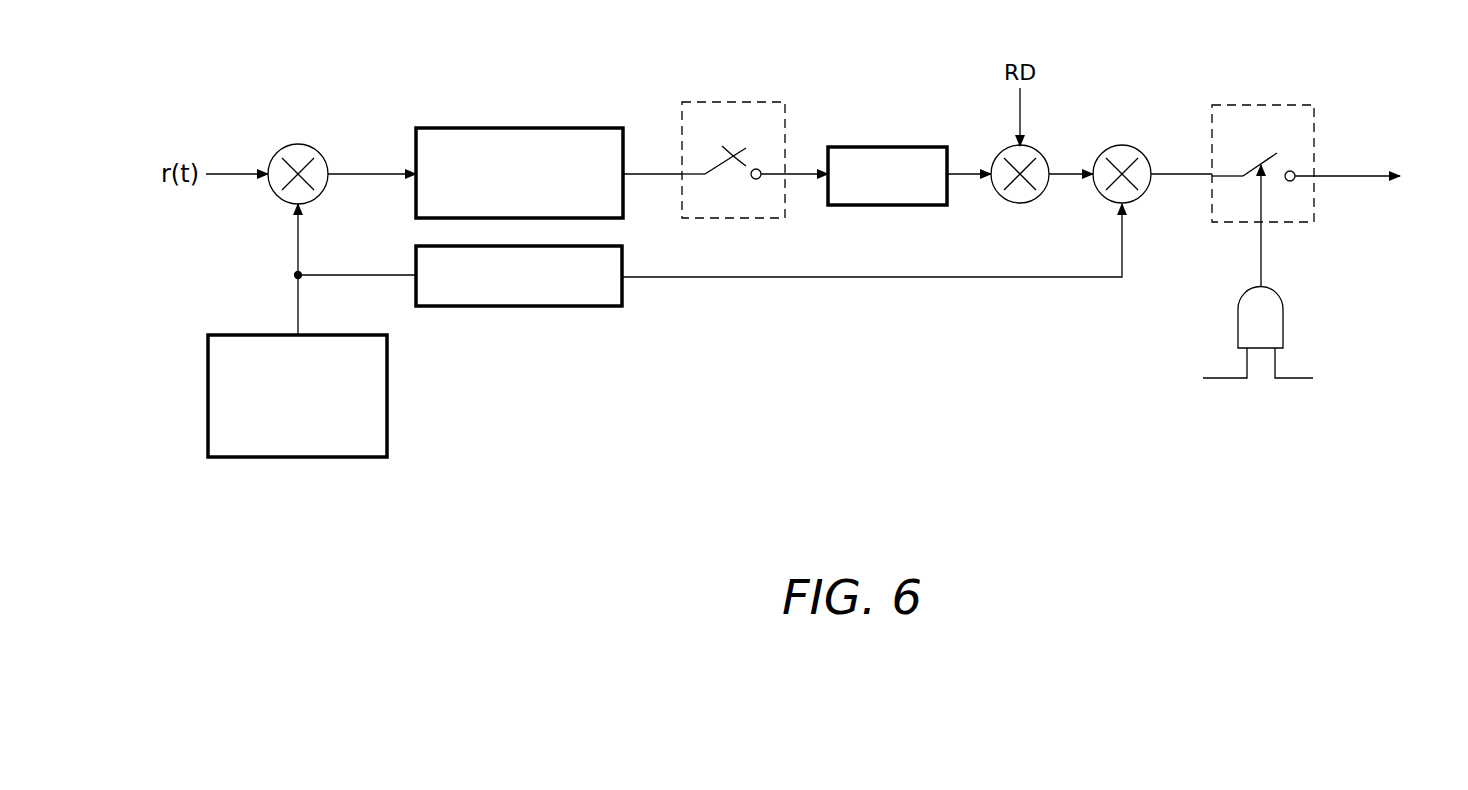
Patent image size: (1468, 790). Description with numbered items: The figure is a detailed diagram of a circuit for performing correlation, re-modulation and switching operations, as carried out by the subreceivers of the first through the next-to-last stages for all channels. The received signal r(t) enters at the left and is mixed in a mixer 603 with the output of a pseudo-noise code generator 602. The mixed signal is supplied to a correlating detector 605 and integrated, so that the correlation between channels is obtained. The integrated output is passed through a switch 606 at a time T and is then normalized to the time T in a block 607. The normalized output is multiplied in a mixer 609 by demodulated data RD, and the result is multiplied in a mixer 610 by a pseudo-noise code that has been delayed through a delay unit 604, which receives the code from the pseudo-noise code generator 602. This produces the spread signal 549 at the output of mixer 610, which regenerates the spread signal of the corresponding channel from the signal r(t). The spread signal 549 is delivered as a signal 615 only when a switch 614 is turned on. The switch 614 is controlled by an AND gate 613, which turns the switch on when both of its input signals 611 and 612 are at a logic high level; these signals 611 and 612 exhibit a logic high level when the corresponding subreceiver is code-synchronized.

The spread signal 549 is at (1178, 173).
The pseudo-noise code generator 602 is at (208, 396).
The mixer 603 is at (318, 146).
The delay unit 604 is at (521, 307).
The correlating detector 605 is at (520, 128).
The switch 606 is at (733, 102).
The block 607 is at (887, 147).
The mixer 609 is at (1020, 203).
The mixer 610 is at (1122, 146).
The signal 611 is at (1195, 370).
The signal 612 is at (1324, 370).
The AND gate 613 is at (1283, 318).
The switch 614 is at (1261, 105).
The signal 615 is at (1375, 177).